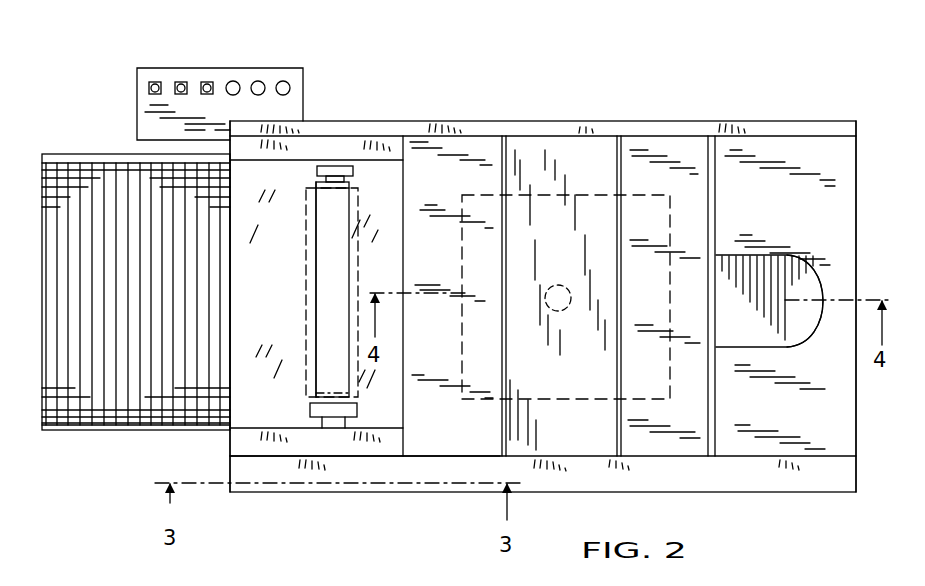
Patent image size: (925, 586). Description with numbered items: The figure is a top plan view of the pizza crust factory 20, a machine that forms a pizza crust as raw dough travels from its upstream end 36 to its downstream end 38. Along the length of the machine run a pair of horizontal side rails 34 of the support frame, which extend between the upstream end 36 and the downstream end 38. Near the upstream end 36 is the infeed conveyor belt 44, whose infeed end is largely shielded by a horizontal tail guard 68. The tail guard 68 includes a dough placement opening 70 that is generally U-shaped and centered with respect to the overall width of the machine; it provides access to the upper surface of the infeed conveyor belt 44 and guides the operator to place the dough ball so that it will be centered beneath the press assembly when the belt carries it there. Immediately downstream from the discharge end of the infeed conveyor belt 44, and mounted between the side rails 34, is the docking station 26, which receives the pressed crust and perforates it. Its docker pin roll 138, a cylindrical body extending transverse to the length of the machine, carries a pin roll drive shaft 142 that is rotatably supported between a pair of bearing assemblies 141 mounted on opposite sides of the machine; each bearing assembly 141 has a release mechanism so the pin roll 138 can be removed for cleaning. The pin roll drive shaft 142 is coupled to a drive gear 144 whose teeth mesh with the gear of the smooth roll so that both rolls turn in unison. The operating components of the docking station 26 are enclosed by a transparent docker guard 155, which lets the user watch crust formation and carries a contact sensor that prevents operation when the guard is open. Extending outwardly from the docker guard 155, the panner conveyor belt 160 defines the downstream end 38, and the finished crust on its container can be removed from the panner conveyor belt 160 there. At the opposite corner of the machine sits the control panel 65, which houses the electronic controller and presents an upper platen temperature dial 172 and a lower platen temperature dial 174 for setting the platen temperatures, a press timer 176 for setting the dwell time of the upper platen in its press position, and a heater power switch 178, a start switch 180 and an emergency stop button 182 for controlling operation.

The pizza crust factory 20 is at (476, 100).
The docking station 26 is at (345, 463).
The horizontal side rails 34 is at (596, 128).
The upstream end 36 is at (857, 228).
The downstream end 38 is at (230, 440).
The infeed conveyor belt 44 is at (728, 275).
The control panel 65 is at (137, 137).
The horizontal tail guard 68 is at (790, 150).
The dough placement opening 70 is at (822, 290).
The docker pin roll 138 is at (335, 250).
The bearing assemblies 141 is at (346, 168).
The pin roll drive shaft 142 is at (318, 170).
The drive gear 144 is at (315, 410).
The docker guard 155 is at (305, 146).
The panner conveyor belt 160 is at (48, 360).
The upper platen temperature dial 172 is at (150, 85).
The lower platen temperature dial 174 is at (178, 82).
The press timer 176 is at (207, 82).
The heater power switch 178 is at (237, 82).
The start switch 180 is at (262, 84).
The emergency stop button 182 is at (286, 85).